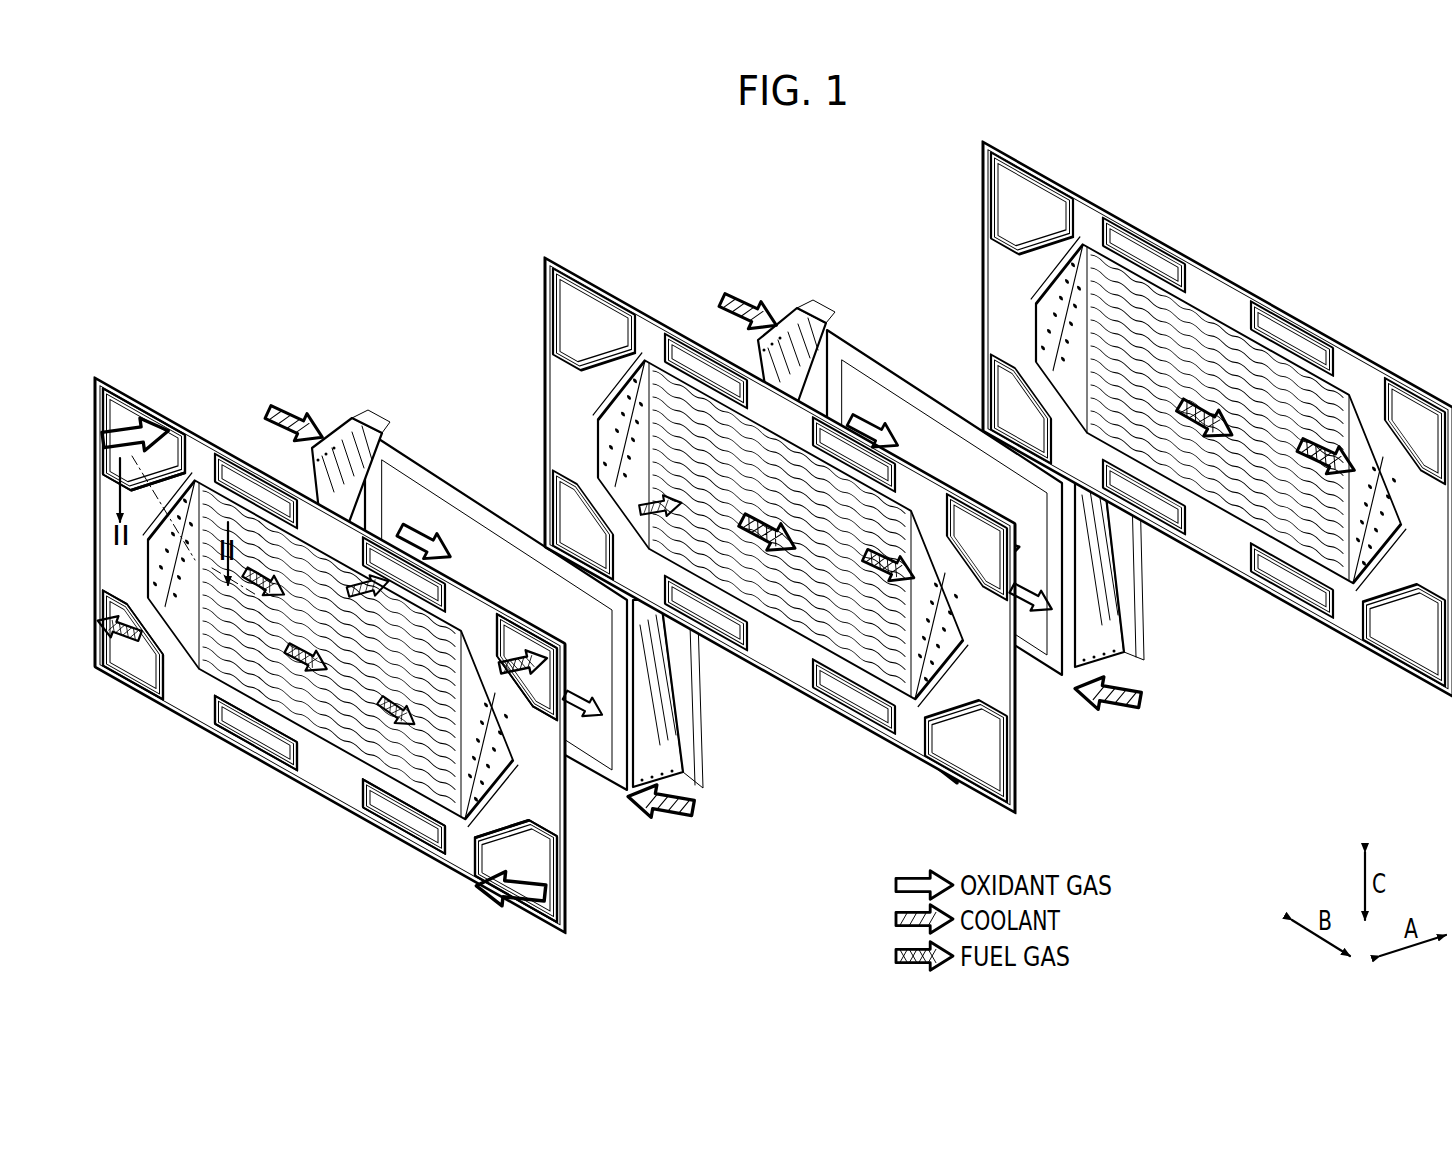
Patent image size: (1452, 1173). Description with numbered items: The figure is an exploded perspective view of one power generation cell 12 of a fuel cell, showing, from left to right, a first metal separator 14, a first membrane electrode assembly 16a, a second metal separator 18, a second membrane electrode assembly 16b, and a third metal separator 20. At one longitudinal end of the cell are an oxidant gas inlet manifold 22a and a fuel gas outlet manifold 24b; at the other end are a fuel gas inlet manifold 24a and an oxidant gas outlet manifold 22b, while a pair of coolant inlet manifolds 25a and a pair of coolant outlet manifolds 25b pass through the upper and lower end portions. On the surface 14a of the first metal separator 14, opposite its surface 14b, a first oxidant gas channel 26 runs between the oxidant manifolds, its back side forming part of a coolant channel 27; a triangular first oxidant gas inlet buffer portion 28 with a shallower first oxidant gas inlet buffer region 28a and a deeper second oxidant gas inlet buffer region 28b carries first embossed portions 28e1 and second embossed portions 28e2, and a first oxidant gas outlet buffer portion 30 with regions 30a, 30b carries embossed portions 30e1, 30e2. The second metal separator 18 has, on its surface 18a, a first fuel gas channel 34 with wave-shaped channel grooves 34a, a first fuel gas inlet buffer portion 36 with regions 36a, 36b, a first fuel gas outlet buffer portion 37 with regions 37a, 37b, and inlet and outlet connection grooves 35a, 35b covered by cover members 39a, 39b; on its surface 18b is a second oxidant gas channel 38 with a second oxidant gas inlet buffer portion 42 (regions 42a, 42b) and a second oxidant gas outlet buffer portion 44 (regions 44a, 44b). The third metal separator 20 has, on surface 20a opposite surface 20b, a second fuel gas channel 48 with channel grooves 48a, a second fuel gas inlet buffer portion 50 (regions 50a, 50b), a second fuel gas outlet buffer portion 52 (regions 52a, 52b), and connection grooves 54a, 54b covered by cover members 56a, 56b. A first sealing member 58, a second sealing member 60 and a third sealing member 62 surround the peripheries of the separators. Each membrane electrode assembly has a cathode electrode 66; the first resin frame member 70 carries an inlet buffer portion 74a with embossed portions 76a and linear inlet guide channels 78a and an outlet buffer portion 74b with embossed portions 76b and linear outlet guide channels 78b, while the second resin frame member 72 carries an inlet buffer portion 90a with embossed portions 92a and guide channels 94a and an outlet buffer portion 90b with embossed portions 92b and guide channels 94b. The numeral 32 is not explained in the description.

The power generation cell 12 is at (283, 227).
The first metal separator 14 is at (104, 376).
The surface 14a is at (565, 866).
The surface 14b is at (565, 887).
The first membrane electrode assembly 16a is at (336, 420).
The second membrane electrode assembly 16b is at (798, 300).
The second metal separator 18 is at (546, 272).
The surface 18a is at (1017, 770).
The surface 18b is at (1017, 742).
The third metal separator 20 is at (982, 150).
The surface 20a is at (983, 262).
The surface 20b is at (983, 230).
The oxidant gas inlet manifold 22a is at (1010, 192).
The oxidant gas outlet manifold 22b is at (545, 900).
The fuel gas inlet manifold 24a is at (1425, 371).
The fuel gas outlet manifold 24b is at (135, 655).
The coolant inlet manifolds 25a is at (258, 742).
The coolant outlet manifolds 25b is at (385, 785).
The first oxidant gas channel 26 is at (342, 738).
The coolant channel 27 is at (307, 720).
The first oxidant gas inlet buffer portion 28 is at (232, 368).
The first oxidant gas inlet buffer region 28a is at (205, 520).
The second oxidant gas inlet buffer region 28b is at (180, 527).
The first embossed portions 28e1 is at (200, 700).
The second embossed portions 28e2 is at (165, 680).
The first oxidant gas outlet buffer portion 30 is at (560, 760).
The first oxidant gas outlet buffer region 30a is at (488, 695).
The second oxidant gas outlet buffer region 30b is at (498, 730).
The first embossed portions 30e1 is at (455, 860).
The second embossed portions 30e2 is at (520, 800).
The second resin-framed MEA 32 is at (1245, 500).
The first fuel gas channel 34 is at (752, 600).
The wave-shaped channel grooves 34a is at (742, 700).
The inlet connection grooves 35a is at (972, 522).
The outlet connection grooves 35b is at (585, 575).
The first fuel gas inlet buffer portion 36 is at (880, 845).
The first fuel gas inlet buffer region 36a is at (862, 765).
The second fuel gas inlet buffer region 36b is at (832, 710).
The first fuel gas outlet buffer portion 37 is at (478, 475).
The first fuel gas outlet buffer region 37a is at (600, 432).
The second fuel gas outlet buffer region 37b is at (600, 470).
The second oxidant gas channel 38 is at (790, 600).
The cover member 39a is at (937, 505).
The cover member 39b is at (640, 600).
The second oxidant gas inlet buffer portion 42 is at (478, 400).
The first oxidant gas inlet buffer region 42a is at (585, 420).
The second oxidant gas inlet buffer region 42b is at (560, 385).
The second oxidant gas outlet buffer portion 44 is at (1012, 650).
The first oxidant gas outlet buffer region 44a is at (1035, 662).
The second oxidant gas outlet buffer region 44b is at (1040, 698).
The second fuel gas channel 48 is at (1215, 470).
The wave-shaped channel grooves 48a is at (1182, 470).
The second fuel gas inlet buffer portion 50 is at (1334, 690).
The first fuel gas inlet buffer region 50a is at (1320, 612).
The second fuel gas inlet buffer region 50b is at (1295, 600).
The second fuel gas outlet buffer portion 52 is at (1177, 165).
The first fuel gas outlet buffer region 52a is at (1080, 300).
The second fuel gas outlet buffer region 52b is at (1100, 370).
The inlet connection grooves 54a is at (1396, 400).
The outlet connection grooves 54b is at (1000, 392).
The cover member 56a is at (1378, 395).
The cover member 56b is at (1002, 360).
The first sealing member 58 is at (455, 882).
The second sealing member 60 is at (966, 790).
The third sealing member 62 is at (1398, 672).
The cathode electrode 66 is at (420, 500).
The first resin frame member 70 is at (703, 775).
The second resin frame member 72 is at (1145, 655).
The inlet buffer portion 74a is at (355, 418).
The outlet buffer portion 74b is at (698, 800).
The embossed portions 76a is at (312, 458).
The embossed portions 76b is at (662, 790).
The linear inlet guide channels 78a is at (362, 448).
The linear outlet guide channels 78b is at (650, 772).
The inlet buffer portion 90a is at (808, 305).
The outlet buffer portion 90b is at (1098, 680).
The embossed portions 92a is at (768, 336).
The embossed portions 92b is at (1125, 668).
The linear inlet guide channels 94a is at (815, 335).
The linear outlet guide channels 94b is at (1105, 620).